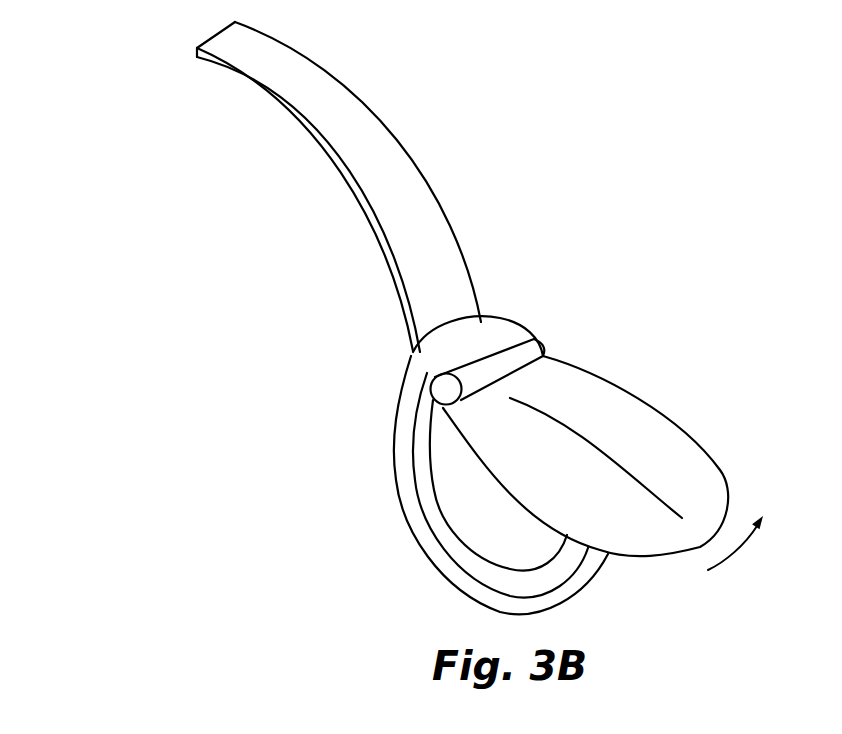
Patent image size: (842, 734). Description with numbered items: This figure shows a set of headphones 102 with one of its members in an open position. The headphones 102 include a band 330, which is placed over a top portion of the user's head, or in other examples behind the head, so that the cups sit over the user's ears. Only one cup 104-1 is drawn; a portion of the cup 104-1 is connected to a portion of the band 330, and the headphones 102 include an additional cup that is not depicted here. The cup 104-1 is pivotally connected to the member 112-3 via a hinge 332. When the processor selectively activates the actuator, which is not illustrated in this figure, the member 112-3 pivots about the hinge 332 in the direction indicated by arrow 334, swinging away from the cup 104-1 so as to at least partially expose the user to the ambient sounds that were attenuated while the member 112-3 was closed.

The headphones 102 is at (118, 112).
The band 330 is at (357, 191).
The hinge 332 is at (432, 385).
The cup 104-1 is at (395, 436).
The member 112-3 is at (675, 441).
The arrow 334 is at (719, 551).